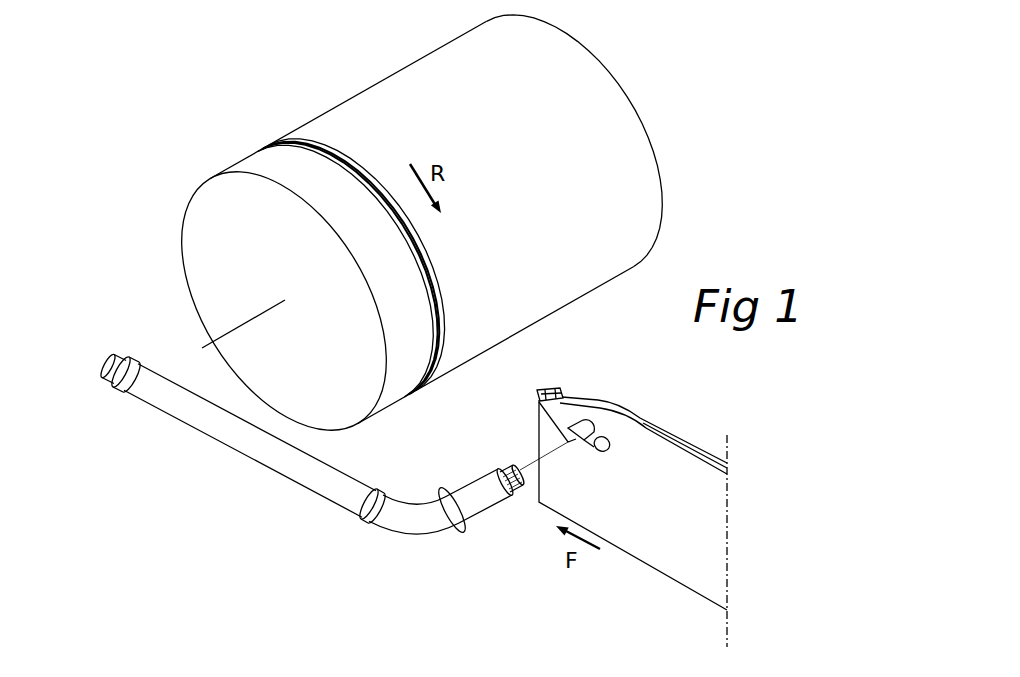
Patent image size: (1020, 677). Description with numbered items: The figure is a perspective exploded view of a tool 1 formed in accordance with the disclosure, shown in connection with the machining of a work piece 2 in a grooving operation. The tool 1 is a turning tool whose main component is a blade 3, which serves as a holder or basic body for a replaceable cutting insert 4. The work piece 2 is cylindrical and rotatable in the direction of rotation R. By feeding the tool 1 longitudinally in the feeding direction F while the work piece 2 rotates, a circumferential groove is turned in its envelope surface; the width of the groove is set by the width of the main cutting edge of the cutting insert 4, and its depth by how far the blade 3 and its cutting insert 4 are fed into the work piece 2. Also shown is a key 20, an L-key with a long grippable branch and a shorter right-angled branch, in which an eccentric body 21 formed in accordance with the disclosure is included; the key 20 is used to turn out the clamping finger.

The tool 1 is at (632, 486).
The work piece 2 is at (383, 70).
The blade 3 is at (632, 565).
The cutting insert 4 is at (555, 382).
The key 20 is at (248, 472).
The eccentric body 21 is at (504, 470).